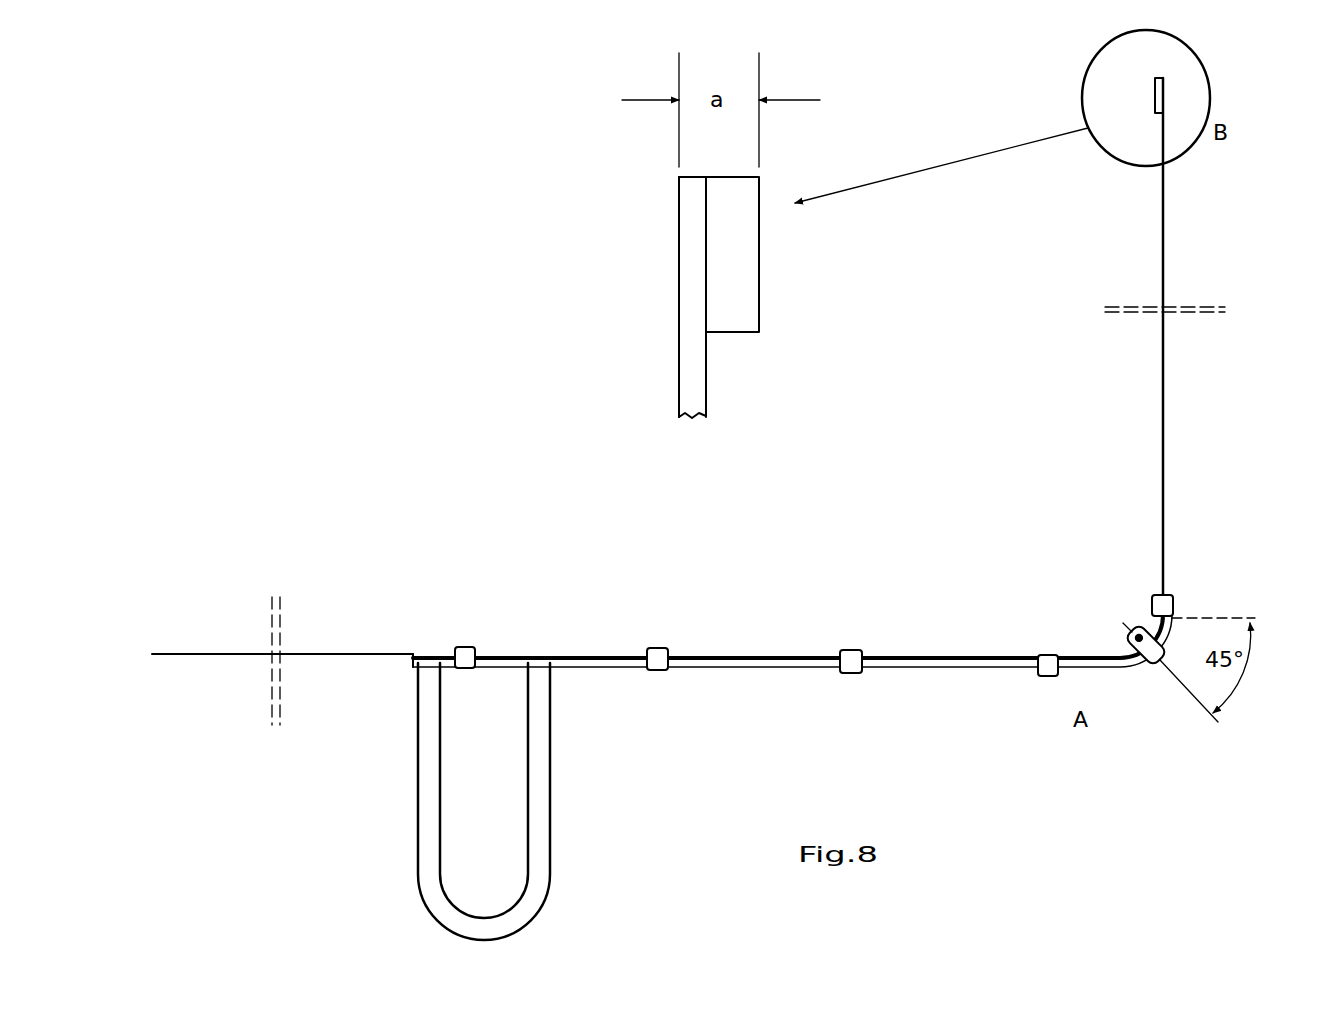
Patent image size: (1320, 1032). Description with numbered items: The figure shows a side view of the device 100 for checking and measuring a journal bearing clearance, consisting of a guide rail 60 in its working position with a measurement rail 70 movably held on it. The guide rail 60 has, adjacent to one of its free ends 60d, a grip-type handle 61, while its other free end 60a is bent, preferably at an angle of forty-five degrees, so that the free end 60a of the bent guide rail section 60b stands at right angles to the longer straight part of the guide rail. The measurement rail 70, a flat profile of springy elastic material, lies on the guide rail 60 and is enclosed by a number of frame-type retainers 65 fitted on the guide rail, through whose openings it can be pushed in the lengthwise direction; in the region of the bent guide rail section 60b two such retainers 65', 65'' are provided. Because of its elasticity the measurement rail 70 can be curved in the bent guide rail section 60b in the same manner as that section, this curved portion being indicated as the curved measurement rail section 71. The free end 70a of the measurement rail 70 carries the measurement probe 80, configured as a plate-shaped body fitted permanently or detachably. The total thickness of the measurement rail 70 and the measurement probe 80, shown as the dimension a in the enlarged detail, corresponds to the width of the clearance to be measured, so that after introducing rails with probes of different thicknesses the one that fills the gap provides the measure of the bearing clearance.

The guide rail 60 is at (747, 660).
The free end 60a is at (1173, 588).
The bent guide rail section 60b is at (1135, 670).
The free end 60d is at (413, 662).
The grip-type handle 61 is at (535, 845).
The frame-type retainers 65 is at (693, 597).
The frame-type retainer 65' is at (1049, 611).
The frame-type retainer 65'' is at (1136, 559).
The measurement rail 70 is at (702, 385).
The free end 70a is at (658, 297).
The curved measurement rail section 71 is at (1160, 358).
The measurement probe 80 is at (738, 293).
The device 100 is at (1183, 473).